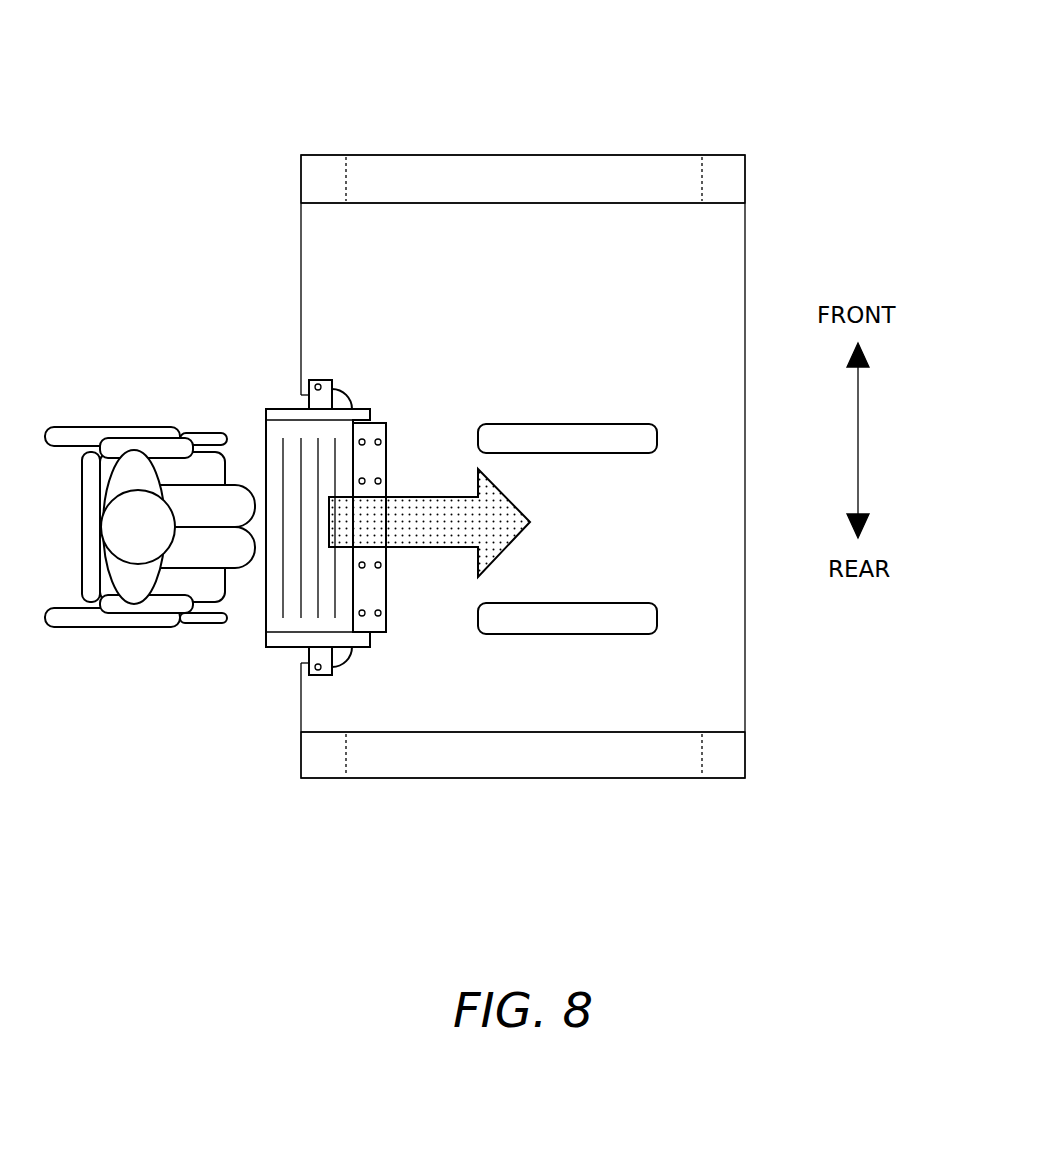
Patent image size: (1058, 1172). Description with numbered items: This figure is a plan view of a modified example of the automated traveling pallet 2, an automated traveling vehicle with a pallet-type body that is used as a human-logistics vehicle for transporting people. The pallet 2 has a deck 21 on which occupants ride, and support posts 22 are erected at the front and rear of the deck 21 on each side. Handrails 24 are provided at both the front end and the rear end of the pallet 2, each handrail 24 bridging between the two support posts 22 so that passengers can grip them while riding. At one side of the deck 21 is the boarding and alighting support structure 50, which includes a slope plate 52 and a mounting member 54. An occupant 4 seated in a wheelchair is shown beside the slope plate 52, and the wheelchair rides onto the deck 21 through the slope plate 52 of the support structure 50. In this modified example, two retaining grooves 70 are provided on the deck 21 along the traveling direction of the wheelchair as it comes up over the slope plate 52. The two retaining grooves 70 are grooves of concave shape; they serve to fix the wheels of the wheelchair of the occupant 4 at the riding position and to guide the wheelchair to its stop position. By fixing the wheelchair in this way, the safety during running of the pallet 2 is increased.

The automated traveling pallet 2 is at (727, 55).
The occupant 4 is at (68, 427).
The deck 21 is at (710, 532).
The support post 22 is at (346, 158).
The handrail 24 is at (620, 178).
The boarding and alighting support structure 50 is at (277, 675).
The slope plate 52 is at (317, 438).
The mounting member 54 is at (373, 588).
The retaining groove 70 is at (658, 435).